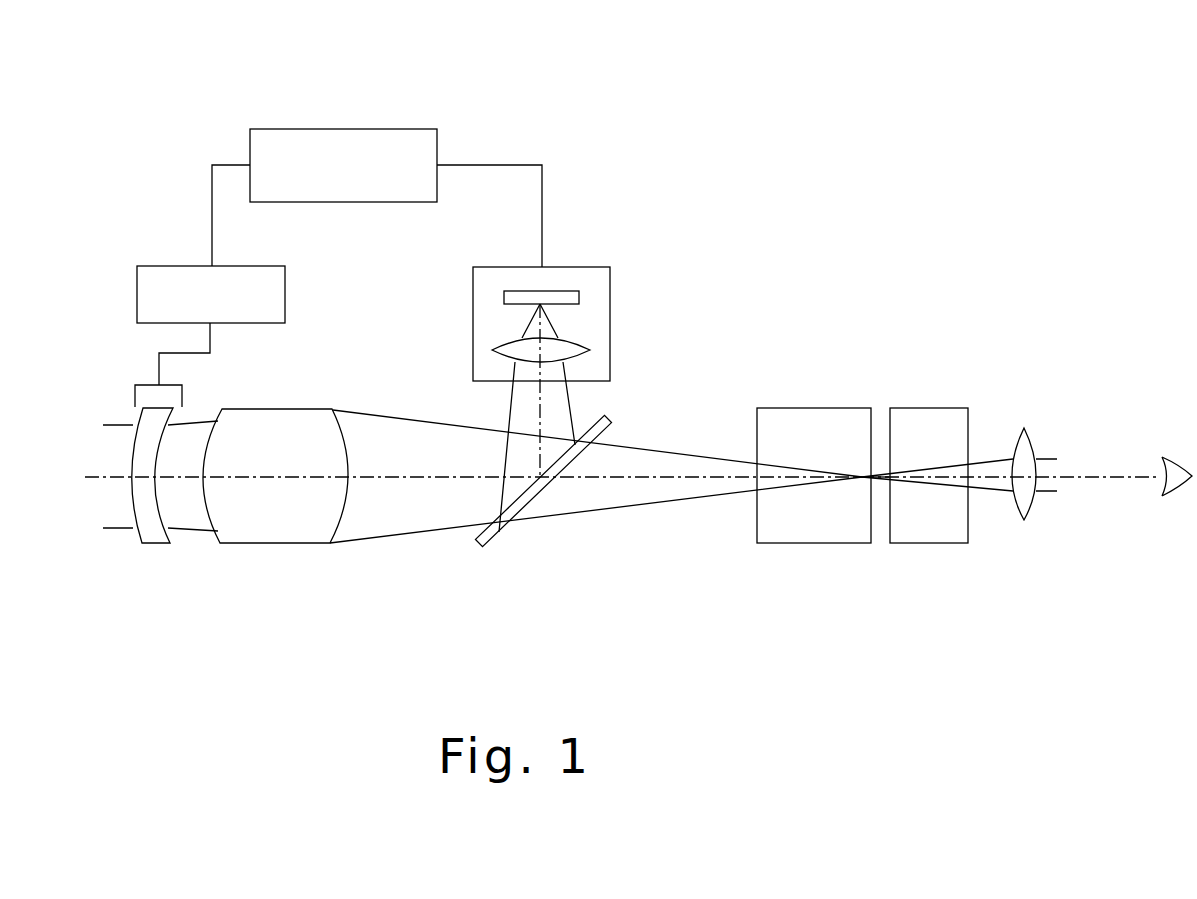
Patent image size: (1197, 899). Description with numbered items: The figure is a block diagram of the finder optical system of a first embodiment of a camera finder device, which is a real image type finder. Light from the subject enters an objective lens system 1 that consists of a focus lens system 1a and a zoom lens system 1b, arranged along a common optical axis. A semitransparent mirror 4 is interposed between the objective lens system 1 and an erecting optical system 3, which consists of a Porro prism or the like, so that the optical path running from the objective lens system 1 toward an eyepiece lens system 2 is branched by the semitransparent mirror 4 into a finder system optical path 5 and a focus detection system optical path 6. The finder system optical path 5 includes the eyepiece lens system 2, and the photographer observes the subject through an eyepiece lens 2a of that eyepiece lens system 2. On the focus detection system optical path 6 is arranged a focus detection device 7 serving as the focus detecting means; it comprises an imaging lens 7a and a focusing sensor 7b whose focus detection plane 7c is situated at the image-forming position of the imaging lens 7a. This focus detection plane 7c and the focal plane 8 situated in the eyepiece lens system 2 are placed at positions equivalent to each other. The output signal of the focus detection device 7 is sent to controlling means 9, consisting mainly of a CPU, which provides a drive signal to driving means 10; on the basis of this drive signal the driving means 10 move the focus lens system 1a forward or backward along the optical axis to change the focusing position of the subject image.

The objective lens system 1 is at (214, 541).
The focus lens system 1a is at (147, 543).
The zoom lens system 1b is at (304, 543).
The eyepiece lens system 2 is at (1085, 413).
The eyepiece lens 2a is at (1023, 432).
The erecting optical system 3 is at (815, 533).
The semitransparent mirror 4 is at (500, 533).
The finder system optical path 5 is at (650, 500).
The focus detection system optical path 6 is at (573, 409).
The focus detection device 7 is at (524, 271).
The imaging lens 7a is at (570, 349).
The focusing sensor 7b is at (553, 297).
The focus detection plane 7c is at (503, 318).
The focal plane 8 is at (873, 428).
The controlling means 9 is at (323, 138).
The driving means 10 is at (150, 277).